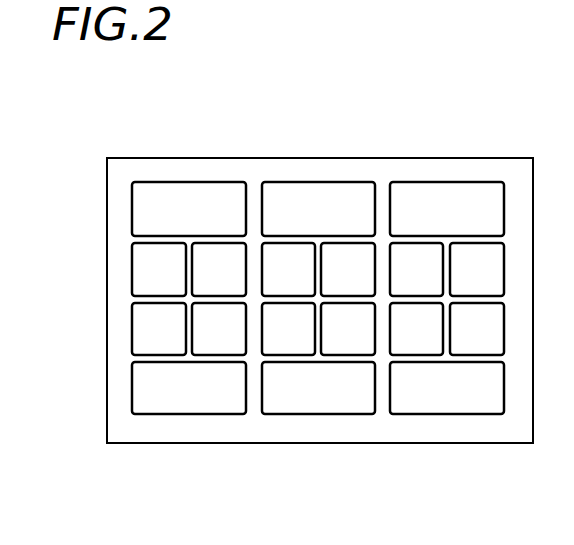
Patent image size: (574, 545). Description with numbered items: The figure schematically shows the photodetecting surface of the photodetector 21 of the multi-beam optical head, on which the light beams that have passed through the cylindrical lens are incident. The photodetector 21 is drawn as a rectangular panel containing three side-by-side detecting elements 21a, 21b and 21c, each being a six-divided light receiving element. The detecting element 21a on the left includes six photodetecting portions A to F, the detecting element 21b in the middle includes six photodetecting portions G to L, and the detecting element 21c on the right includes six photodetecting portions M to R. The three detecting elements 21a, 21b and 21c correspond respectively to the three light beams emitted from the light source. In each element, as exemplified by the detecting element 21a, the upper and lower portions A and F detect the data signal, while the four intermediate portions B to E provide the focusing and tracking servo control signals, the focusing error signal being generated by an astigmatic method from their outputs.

The photodetector 21 is at (441, 443).
The detecting element 21a is at (189, 171).
The detecting element 21b is at (320, 171).
The detecting element 21c is at (452, 172).